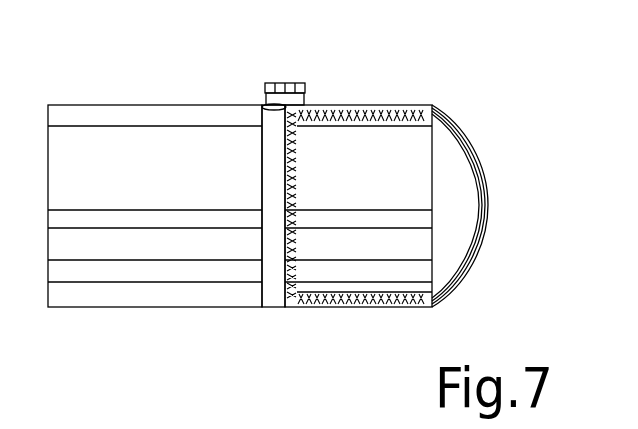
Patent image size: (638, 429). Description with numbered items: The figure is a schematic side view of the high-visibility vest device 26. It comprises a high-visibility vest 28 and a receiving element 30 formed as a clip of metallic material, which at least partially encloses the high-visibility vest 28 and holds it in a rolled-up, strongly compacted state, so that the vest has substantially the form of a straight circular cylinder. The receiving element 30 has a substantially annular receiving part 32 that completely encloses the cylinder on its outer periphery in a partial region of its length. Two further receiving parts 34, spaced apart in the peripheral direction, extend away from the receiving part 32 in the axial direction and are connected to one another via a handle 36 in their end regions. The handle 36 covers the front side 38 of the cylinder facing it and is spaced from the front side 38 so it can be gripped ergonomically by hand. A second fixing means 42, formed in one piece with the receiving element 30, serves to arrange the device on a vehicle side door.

The high-visibility vest device 26 is at (179, 379).
The high-visibility vest 28 is at (137, 122).
The receiving element 30 is at (340, 104).
The receiving part 32 is at (273, 290).
The receiving parts 34 is at (378, 108).
The handle 36 is at (488, 200).
The front side 38 is at (458, 251).
The second fixing means 42 is at (287, 85).